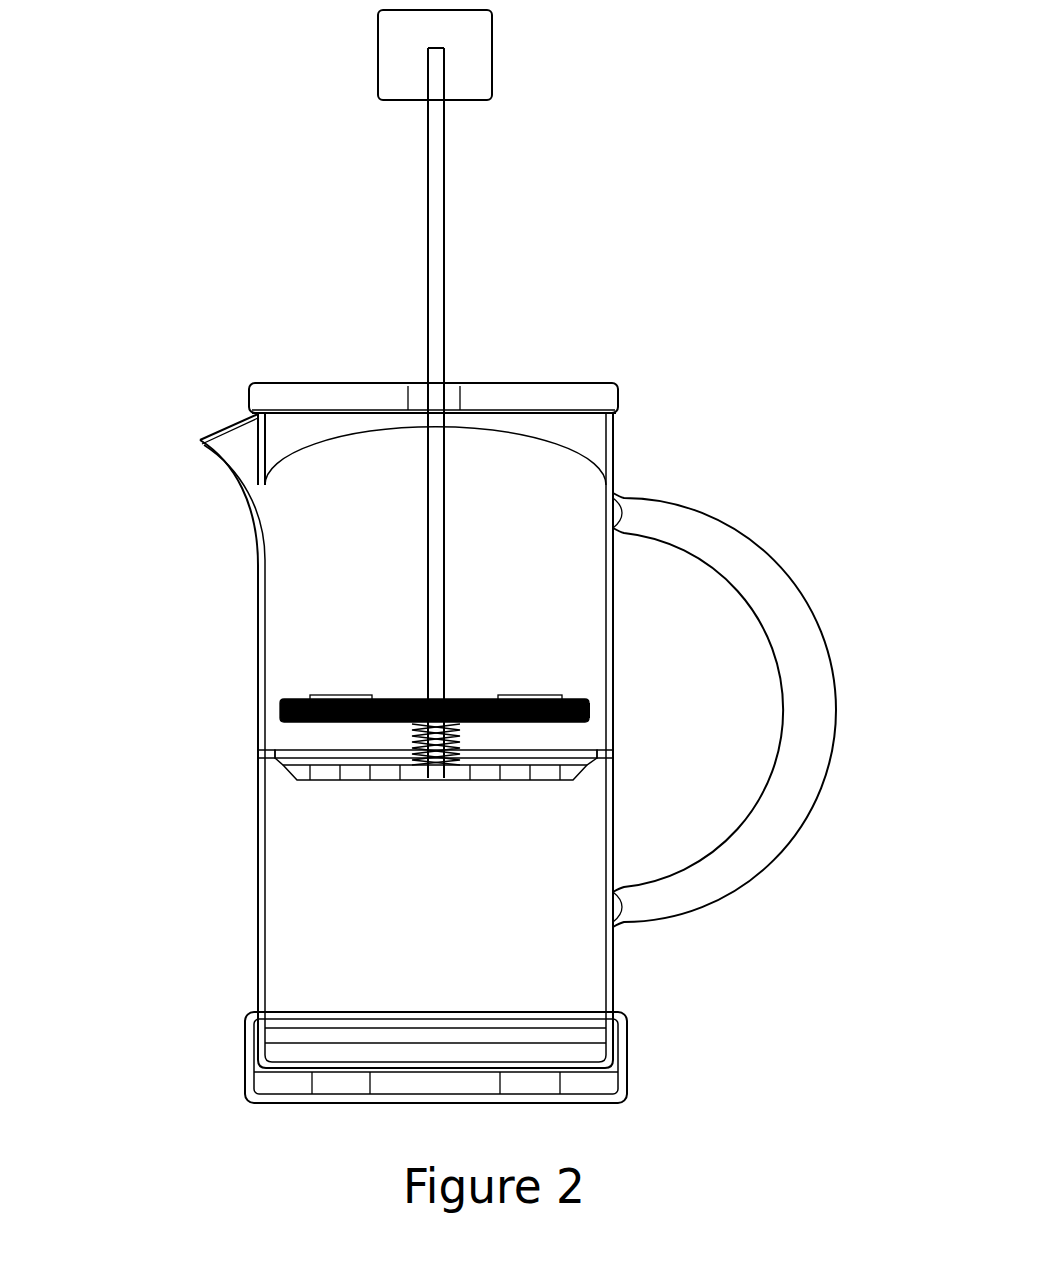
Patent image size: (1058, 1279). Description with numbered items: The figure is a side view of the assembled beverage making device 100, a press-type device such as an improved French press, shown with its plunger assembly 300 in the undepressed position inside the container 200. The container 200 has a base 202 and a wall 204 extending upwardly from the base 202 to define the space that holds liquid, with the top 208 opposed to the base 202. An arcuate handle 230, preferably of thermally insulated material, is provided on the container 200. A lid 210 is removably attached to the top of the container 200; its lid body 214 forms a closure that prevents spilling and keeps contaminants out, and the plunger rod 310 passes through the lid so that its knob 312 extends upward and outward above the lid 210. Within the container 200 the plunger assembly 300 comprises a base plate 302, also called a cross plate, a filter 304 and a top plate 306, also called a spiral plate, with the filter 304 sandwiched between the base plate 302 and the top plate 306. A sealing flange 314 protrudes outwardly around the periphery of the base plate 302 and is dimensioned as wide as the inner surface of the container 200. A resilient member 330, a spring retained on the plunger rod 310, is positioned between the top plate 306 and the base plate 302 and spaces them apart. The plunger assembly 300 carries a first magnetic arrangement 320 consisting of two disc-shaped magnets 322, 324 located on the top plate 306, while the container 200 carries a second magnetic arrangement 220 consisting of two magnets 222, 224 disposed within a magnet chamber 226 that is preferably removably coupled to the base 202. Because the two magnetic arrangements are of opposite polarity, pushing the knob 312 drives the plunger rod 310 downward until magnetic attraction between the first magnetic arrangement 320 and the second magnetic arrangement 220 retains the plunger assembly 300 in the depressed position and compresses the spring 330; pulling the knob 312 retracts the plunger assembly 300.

The beverage making device 100 is at (350, 275).
The container 200 is at (205, 510).
The base 202 is at (278, 1020).
The wall 204 is at (577, 843).
The top 208 is at (623, 409).
The lid 210 is at (557, 390).
The lid body 214 is at (490, 392).
The second magnetic arrangement 220 is at (383, 1102).
The magnet 222 is at (540, 1078).
The magnet 224 is at (328, 1078).
The magnet chamber 226 is at (607, 1072).
The handle 230 is at (806, 579).
The plunger assembly 300 is at (385, 530).
The base plate 302 is at (360, 777).
The filter 304 is at (590, 762).
The top plate 306 is at (587, 715).
The plunger rod 310 is at (430, 210).
The knob 312 is at (453, 73).
The sealing flange 314 is at (277, 753).
The first magnetic arrangement 320 is at (385, 686).
The magnet 322 is at (545, 697).
The magnet 324 is at (320, 695).
The resilient member 330 is at (413, 765).